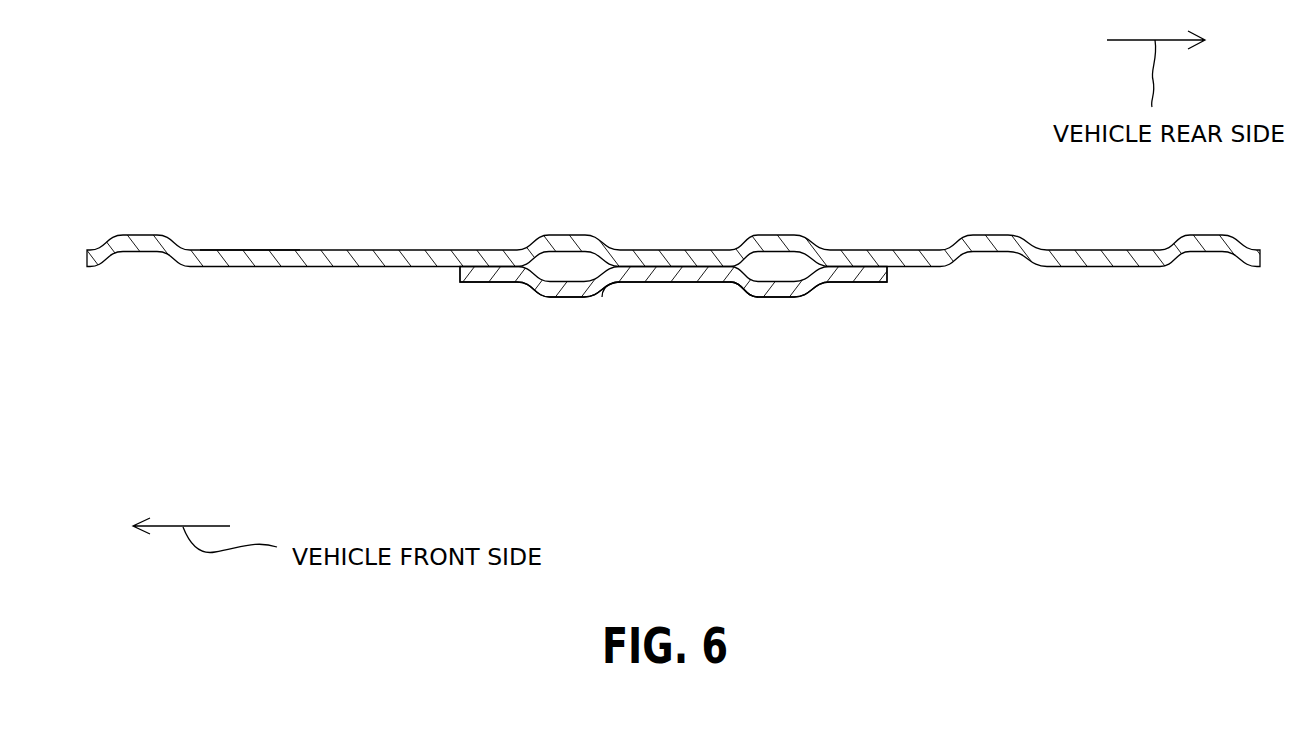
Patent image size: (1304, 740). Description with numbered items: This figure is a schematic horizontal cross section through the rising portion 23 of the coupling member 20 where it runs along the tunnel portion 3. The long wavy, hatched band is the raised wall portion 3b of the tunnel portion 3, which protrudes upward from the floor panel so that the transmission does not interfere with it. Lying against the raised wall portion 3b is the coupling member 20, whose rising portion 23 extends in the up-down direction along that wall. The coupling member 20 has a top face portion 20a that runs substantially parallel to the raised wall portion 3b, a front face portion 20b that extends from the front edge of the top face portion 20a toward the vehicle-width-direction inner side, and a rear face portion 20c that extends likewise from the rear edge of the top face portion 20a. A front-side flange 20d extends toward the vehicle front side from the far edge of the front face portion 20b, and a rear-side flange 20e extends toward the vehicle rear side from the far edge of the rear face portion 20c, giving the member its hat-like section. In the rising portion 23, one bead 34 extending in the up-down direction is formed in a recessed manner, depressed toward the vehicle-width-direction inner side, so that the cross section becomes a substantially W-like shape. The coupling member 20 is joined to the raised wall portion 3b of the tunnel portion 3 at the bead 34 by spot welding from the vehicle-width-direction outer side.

The tunnel portion 3 is at (987, 236).
The raised wall portion 3b is at (243, 250).
The coupling member 20 is at (577, 297).
The top face portion 20a is at (667, 282).
The front face portion 20b is at (530, 292).
The rear face portion 20c is at (818, 292).
The front-side flange 20d is at (483, 282).
The rear-side flange 20e is at (877, 282).
The rising portion 23 is at (722, 282).
The bead 34 is at (622, 282).